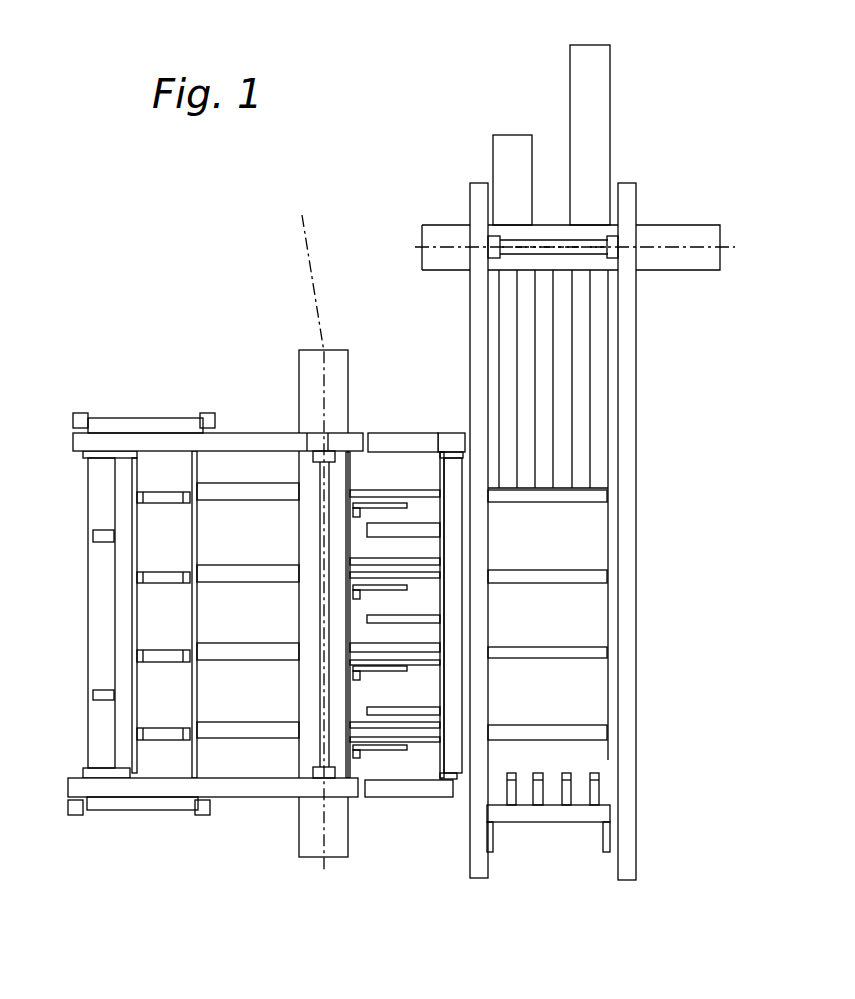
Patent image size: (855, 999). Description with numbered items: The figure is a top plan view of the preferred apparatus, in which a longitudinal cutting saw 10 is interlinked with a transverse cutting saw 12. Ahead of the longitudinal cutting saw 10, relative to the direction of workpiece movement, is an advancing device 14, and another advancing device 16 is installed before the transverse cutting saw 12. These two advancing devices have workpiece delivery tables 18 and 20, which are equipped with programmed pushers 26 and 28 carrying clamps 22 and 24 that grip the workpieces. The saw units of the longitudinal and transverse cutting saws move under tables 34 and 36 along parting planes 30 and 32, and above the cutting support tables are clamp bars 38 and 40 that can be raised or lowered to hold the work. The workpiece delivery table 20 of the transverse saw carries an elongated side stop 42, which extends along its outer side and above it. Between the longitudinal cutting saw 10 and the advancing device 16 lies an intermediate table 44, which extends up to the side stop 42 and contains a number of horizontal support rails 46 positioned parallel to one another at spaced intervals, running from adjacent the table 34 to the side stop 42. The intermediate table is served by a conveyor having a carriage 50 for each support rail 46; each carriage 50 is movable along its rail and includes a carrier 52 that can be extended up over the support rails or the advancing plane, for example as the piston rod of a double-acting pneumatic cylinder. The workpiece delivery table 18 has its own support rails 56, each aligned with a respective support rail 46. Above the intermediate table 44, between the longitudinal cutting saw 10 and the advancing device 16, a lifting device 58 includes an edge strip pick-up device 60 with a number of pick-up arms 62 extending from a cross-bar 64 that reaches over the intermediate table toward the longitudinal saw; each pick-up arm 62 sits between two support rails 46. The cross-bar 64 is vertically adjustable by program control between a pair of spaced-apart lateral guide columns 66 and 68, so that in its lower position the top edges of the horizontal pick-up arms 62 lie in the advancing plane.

The longitudinal cutting saw 10 is at (357, 426).
The transverse cutting saw 12 is at (640, 214).
The advancing device 14 is at (133, 414).
The advancing device 16 is at (602, 767).
The workpiece delivery table 18 is at (233, 755).
The workpiece delivery table 20 is at (575, 432).
The clamps 22 is at (162, 728).
The clamps 24 is at (573, 778).
The programmed pusher 26 is at (103, 502).
The programmed pusher 28 is at (546, 822).
The parting plane 30 is at (304, 530).
The parting plane 32 is at (722, 247).
The table 34 is at (306, 478).
The table 36 is at (678, 263).
The clamp bar 38 is at (318, 538).
The clamp bar 40 is at (536, 244).
The side stop 42 is at (613, 577).
The intermediate table 44 is at (403, 487).
The support rails 46 is at (615, 706).
The carriage 50 is at (388, 506).
The carrier 52 is at (357, 518).
The support rails 56 is at (242, 733).
The lifting device 58 is at (437, 779).
The edge strip pick-up device 60 is at (400, 800).
The pick-up arms 62 is at (440, 737).
The cross-bar 64 is at (450, 567).
The lateral guide column 66 is at (456, 446).
The lateral guide column 68 is at (446, 800).